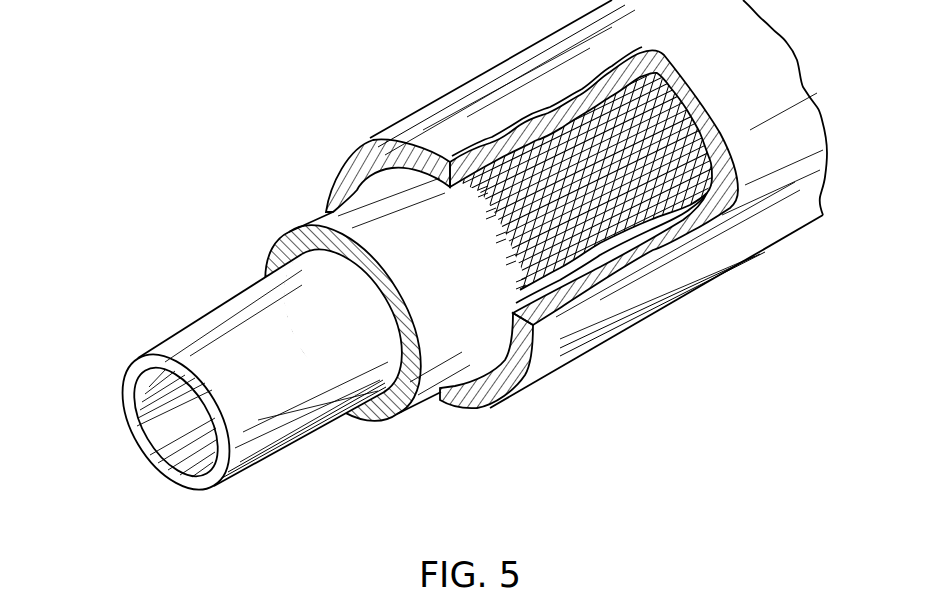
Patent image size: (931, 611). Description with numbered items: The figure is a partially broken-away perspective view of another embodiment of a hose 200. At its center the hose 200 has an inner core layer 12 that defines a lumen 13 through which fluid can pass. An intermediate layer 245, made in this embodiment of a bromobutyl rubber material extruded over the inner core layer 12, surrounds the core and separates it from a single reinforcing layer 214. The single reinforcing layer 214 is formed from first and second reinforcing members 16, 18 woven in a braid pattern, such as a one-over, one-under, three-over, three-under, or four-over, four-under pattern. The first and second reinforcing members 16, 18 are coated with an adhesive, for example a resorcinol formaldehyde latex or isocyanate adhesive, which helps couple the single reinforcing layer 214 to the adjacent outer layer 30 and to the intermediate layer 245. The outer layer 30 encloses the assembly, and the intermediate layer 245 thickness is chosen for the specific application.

The hose 200 is at (428, 42).
The inner core layer 12 is at (130, 378).
The lumen 13 is at (174, 452).
The intermediate layer 245 is at (330, 213).
The first reinforcing member 16 is at (700, 113).
The single reinforcing layer 214 is at (496, 228).
The second reinforcing member 18 is at (680, 67).
The outer layer 30 is at (781, 46).